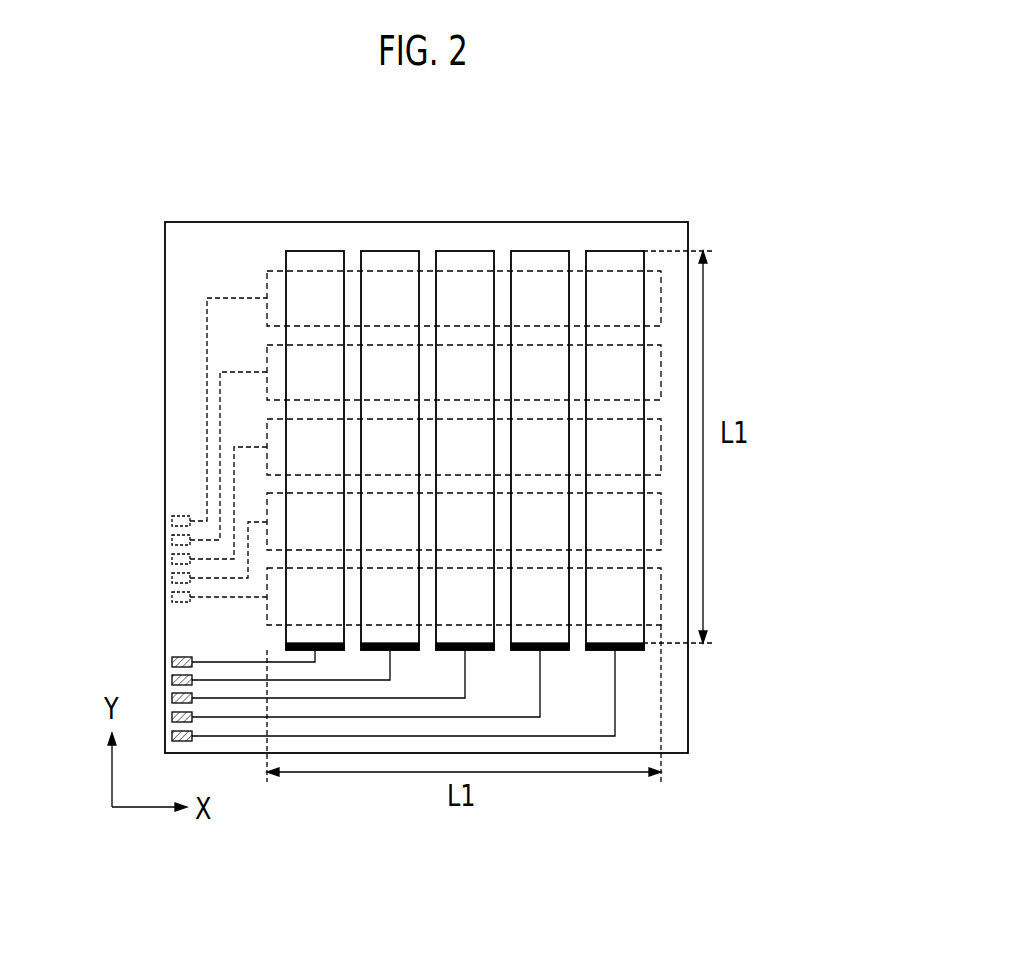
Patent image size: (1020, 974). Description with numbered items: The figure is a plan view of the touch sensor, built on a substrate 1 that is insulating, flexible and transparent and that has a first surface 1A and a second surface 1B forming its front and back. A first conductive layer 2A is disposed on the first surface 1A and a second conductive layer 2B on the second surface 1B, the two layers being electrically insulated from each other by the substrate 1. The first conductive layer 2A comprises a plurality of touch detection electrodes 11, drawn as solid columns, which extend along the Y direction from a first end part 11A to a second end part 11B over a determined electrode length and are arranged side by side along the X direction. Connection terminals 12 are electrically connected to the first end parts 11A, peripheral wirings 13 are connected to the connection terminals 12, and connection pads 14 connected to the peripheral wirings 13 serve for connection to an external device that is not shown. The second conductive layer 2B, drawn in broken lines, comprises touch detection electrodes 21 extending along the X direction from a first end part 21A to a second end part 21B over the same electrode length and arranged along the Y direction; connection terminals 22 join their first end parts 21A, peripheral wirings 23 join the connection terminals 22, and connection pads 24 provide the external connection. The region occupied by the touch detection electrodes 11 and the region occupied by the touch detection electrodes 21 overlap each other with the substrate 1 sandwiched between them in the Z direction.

The substrate 1 is at (690, 711).
The first surface 1A is at (677, 562).
The second surface 1B is at (677, 610).
The first conductive layer 2A is at (465, 238).
The second conductive layer 2B is at (545, 238).
The touch detection electrode 11 is at (314, 262).
The first end part 11A is at (324, 650).
The second end part 11B is at (328, 262).
The connection terminal 12 is at (333, 650).
The peripheral wiring 13 is at (223, 662).
The connection pad 14 is at (172, 662).
The touch detection electrode 21 is at (650, 321).
The first end part 21A is at (265, 286).
The second end part 21B is at (662, 290).
The connection terminal 22 is at (266, 288).
The peripheral wiring 23 is at (206, 350).
The connection pad 24 is at (172, 521).